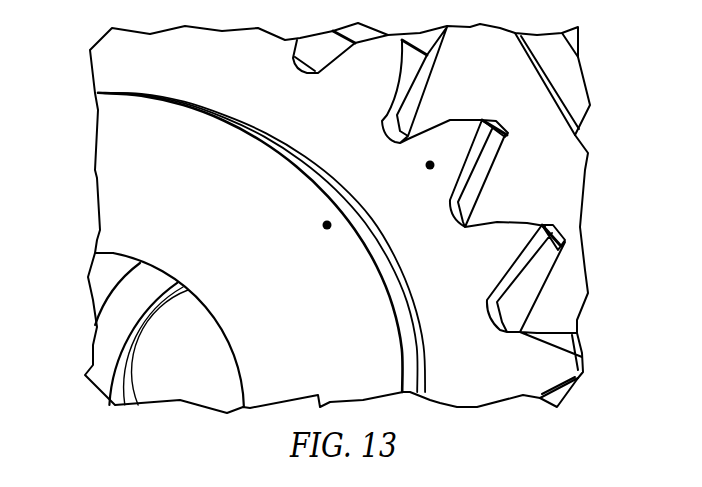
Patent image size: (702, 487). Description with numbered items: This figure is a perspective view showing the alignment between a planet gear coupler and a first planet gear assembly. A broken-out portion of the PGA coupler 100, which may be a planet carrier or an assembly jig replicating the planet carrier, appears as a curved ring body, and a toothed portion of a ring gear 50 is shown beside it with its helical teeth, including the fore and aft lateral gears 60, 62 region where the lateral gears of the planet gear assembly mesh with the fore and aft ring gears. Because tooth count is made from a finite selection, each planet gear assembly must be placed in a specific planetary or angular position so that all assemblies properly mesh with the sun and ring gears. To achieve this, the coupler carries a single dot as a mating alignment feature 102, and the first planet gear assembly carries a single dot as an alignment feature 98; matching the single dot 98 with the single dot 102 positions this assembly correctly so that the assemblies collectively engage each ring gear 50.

The ring gear 50 is at (558, 182).
The fore lateral gear 60 is at (542, 368).
The aft lateral gear 62 is at (607, 391).
The alignment feature 98 is at (434, 148).
The PGA coupler 100 is at (112, 177).
The mating alignment feature 102 is at (325, 242).